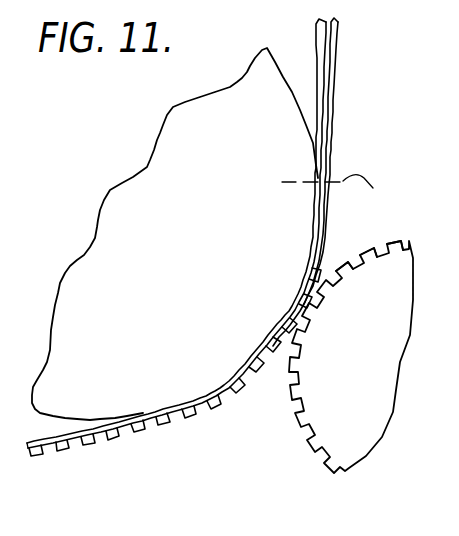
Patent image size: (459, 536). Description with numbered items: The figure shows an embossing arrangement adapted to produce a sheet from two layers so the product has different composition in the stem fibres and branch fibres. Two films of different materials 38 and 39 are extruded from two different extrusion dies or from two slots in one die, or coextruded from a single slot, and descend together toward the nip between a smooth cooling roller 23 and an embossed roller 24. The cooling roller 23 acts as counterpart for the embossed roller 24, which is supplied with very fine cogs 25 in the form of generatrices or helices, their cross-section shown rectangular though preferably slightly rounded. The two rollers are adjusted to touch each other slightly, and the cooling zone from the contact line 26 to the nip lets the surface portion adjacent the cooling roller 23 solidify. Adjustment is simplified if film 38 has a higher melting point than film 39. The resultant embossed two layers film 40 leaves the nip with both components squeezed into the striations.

The smooth cooling roller 23 is at (192, 226).
The embossed roller 24 is at (372, 352).
The cogs 25 is at (392, 238).
The contact line 26 is at (342, 189).
The film 38 is at (316, 44).
The film 39 is at (338, 42).
The embossed two layers film 40 is at (139, 431).